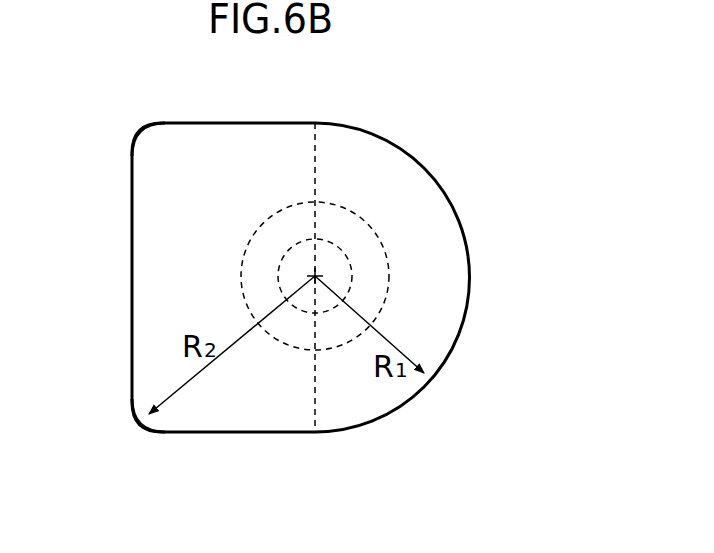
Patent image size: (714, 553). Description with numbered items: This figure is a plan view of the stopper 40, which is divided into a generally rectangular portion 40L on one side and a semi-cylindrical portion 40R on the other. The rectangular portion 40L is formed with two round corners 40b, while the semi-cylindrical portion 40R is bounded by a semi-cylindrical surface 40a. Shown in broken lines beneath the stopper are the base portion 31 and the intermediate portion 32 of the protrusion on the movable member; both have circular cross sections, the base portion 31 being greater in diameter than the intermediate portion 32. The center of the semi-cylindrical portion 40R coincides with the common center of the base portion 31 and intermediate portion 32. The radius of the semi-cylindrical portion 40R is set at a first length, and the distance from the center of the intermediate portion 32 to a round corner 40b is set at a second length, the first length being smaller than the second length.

The stopper 40 is at (295, 266).
The rectangular portion 40L is at (238, 143).
The semi-cylindrical portion 40R is at (429, 289).
The semi-cylindrical surface 40a is at (415, 395).
The round corners 40b is at (140, 137).
The base portion 31 is at (390, 270).
The intermediate portion 32 is at (347, 292).